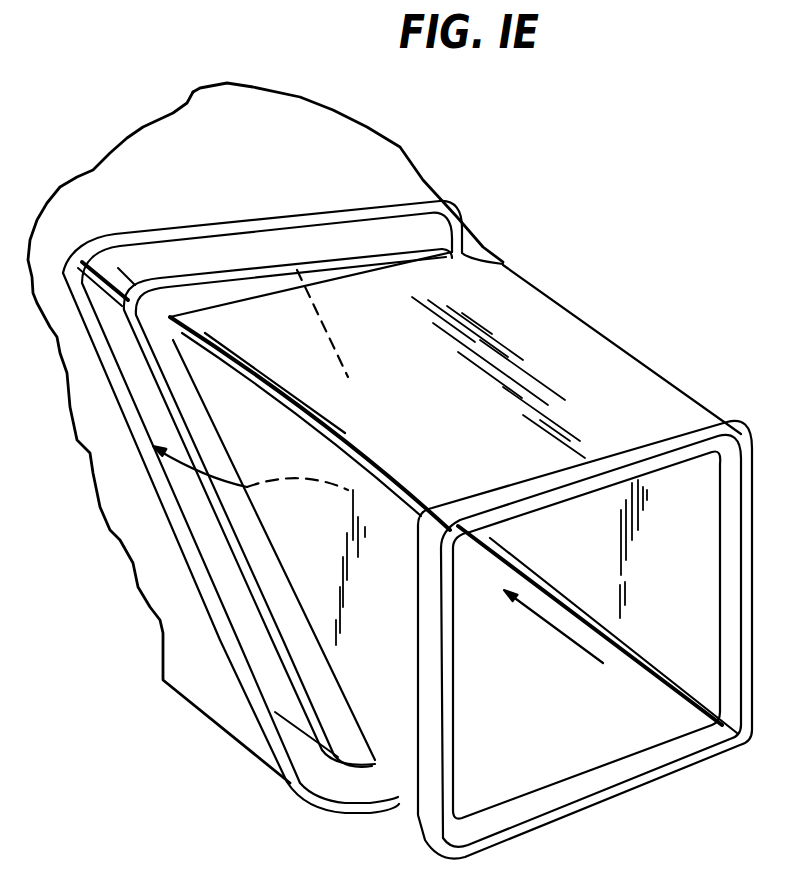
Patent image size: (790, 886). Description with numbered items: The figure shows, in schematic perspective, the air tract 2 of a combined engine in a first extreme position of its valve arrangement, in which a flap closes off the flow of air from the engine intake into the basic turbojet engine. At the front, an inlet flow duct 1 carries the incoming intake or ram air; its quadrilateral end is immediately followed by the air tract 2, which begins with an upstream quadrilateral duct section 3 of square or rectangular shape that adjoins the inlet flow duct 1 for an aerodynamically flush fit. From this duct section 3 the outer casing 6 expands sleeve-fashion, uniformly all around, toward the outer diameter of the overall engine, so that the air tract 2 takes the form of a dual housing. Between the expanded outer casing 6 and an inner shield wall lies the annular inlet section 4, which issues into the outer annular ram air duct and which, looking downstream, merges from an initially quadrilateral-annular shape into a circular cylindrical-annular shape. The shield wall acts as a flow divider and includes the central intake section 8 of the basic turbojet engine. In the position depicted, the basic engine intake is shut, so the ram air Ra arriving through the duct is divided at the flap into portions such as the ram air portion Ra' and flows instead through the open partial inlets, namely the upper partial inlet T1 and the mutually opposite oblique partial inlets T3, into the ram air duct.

The inlet flow duct 1 is at (434, 815).
The air tract 2 is at (486, 225).
The upstream quadrilateral duct section 3 is at (622, 392).
The annular inlet section 4 is at (240, 257).
The outer casing 6 is at (357, 147).
The central intake section 8 is at (207, 537).
The upper partial inlet T1 is at (275, 241).
The oblique partial inlets T3 is at (262, 553).
The ram air Ra is at (553, 653).
The divided ram air portion Ra' is at (203, 522).